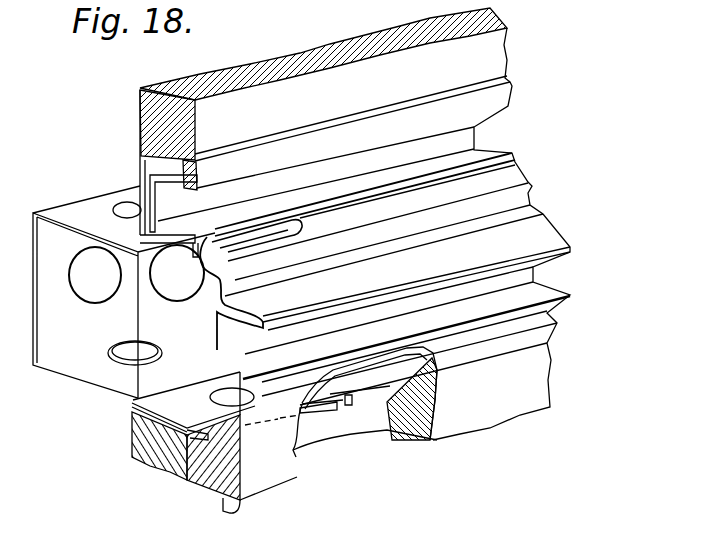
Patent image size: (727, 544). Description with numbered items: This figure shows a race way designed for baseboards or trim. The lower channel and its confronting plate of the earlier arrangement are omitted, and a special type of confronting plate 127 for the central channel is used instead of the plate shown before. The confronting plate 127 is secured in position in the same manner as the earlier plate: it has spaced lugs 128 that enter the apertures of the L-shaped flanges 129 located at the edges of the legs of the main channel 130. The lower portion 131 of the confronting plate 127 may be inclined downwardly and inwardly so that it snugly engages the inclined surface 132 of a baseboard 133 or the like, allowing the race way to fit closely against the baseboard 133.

The confronting plate 127 is at (538, 232).
The spaced lugs 128 is at (360, 403).
The L-shaped flanges 129 is at (258, 235).
The main channel 130 is at (132, 423).
The lower portion of the confronting plate 131 is at (543, 320).
The inclined surface 132 is at (219, 430).
The baseboard 133 is at (243, 512).